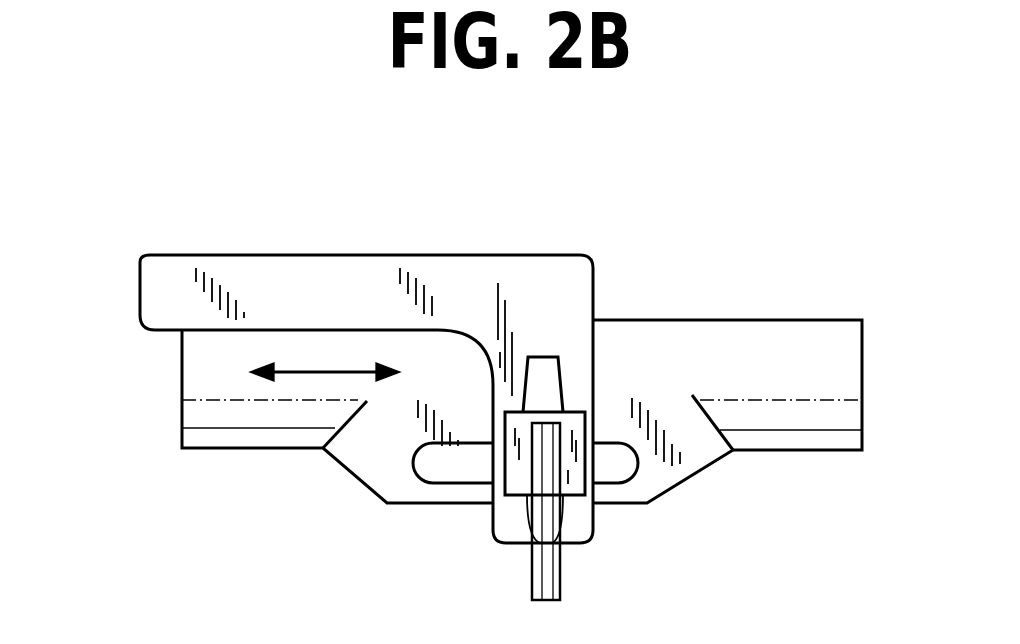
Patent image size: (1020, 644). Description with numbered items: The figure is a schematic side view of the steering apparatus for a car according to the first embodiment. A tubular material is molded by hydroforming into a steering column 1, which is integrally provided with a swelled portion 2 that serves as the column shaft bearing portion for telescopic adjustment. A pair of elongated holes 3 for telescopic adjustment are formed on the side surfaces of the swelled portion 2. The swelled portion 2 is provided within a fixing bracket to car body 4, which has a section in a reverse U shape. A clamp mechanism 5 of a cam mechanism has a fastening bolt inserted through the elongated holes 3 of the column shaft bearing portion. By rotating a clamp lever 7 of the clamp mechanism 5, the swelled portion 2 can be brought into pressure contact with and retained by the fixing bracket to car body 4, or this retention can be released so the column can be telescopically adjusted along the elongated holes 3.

The steering column 1 is at (680, 320).
The swelled portion 2 is at (692, 475).
The elongated holes 3 is at (443, 463).
The fixing bracket to car body 4 is at (383, 253).
The clamp mechanism 5 is at (518, 480).
The clamp lever 7 is at (560, 562).